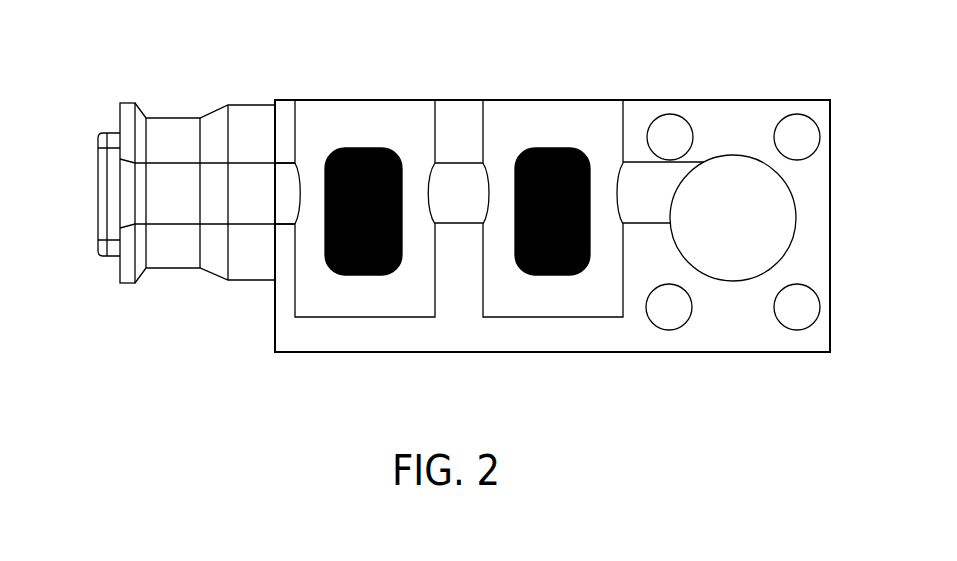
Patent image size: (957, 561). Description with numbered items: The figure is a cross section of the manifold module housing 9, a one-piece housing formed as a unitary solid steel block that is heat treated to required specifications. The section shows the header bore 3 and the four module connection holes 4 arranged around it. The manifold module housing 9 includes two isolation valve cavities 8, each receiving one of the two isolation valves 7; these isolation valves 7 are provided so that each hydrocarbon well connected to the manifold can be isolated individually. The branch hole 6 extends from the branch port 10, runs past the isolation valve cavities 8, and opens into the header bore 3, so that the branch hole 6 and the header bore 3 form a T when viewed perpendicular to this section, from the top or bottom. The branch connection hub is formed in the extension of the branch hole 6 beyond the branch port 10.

The header bore 3 is at (735, 218).
The module connection holes 4 is at (670, 137).
The branch hole 6 is at (253, 193).
The isolation valves 7 is at (365, 148).
The isolation valve cavities 8 is at (387, 298).
The manifold module housing 9 is at (353, 345).
The branch port 10 is at (105, 192).